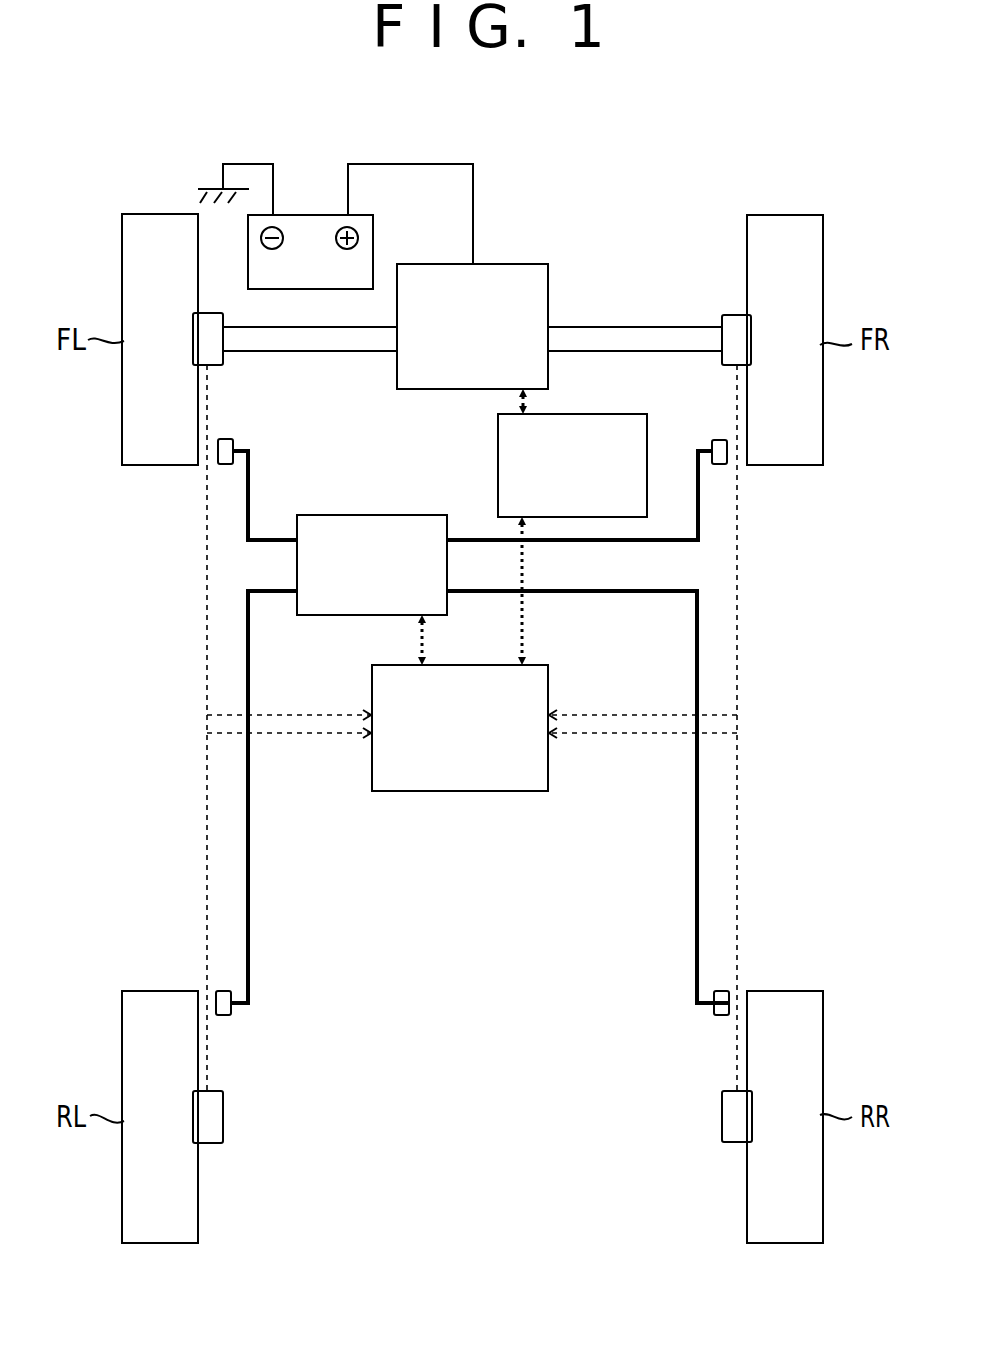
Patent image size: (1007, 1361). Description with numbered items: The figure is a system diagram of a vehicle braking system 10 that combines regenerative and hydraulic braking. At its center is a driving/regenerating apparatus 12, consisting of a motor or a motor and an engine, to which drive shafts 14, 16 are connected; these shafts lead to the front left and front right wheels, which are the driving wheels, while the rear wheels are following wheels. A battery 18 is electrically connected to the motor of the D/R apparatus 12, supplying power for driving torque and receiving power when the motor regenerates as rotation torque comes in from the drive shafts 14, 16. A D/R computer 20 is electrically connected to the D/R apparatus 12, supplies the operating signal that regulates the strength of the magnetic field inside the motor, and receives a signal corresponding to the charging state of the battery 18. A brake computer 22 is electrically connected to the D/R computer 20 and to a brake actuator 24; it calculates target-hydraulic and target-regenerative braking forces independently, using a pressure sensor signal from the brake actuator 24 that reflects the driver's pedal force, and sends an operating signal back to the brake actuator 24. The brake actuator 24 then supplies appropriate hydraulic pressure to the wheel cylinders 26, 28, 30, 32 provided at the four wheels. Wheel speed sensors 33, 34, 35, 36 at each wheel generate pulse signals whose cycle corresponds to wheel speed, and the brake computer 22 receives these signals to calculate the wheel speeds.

The braking system 10 is at (642, 227).
The driving/regenerating apparatus 12 is at (508, 263).
The drive shaft 14 is at (318, 350).
The drive shaft 16 is at (633, 338).
The battery 18 is at (310, 214).
The driving/regenerating computer 20 is at (603, 414).
The brake computer 22 is at (538, 664).
The brake actuator 24 is at (388, 514).
The wheel cylinder 26 is at (208, 327).
The wheel cylinder 28 is at (732, 322).
The wheel cylinder 30 is at (224, 1117).
The wheel cylinder 32 is at (724, 1120).
The wheel speed sensor 33 is at (227, 440).
The wheel speed sensor 34 is at (720, 447).
The wheel speed sensor 35 is at (232, 1008).
The wheel speed sensor 36 is at (718, 1010).